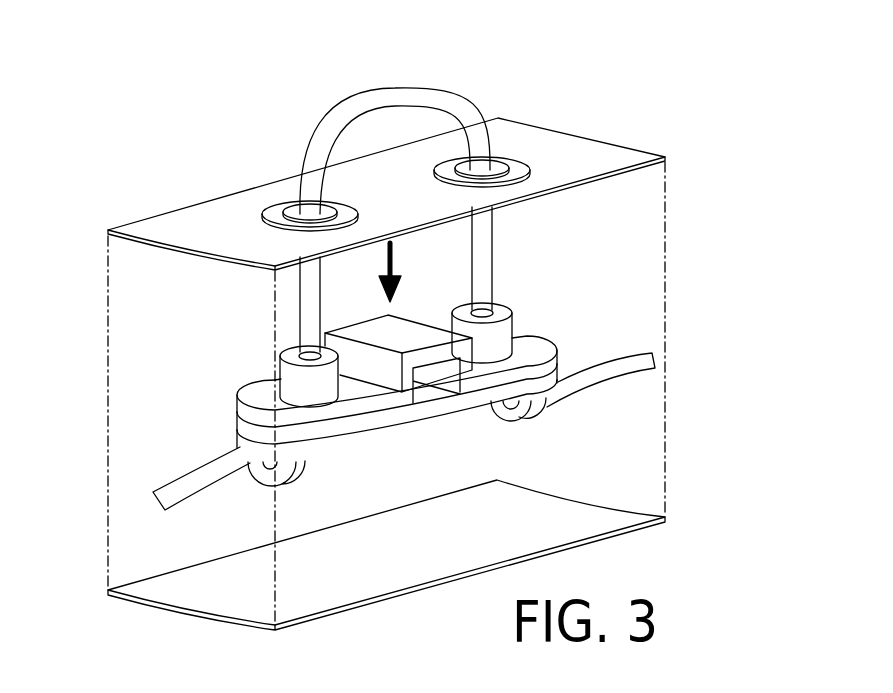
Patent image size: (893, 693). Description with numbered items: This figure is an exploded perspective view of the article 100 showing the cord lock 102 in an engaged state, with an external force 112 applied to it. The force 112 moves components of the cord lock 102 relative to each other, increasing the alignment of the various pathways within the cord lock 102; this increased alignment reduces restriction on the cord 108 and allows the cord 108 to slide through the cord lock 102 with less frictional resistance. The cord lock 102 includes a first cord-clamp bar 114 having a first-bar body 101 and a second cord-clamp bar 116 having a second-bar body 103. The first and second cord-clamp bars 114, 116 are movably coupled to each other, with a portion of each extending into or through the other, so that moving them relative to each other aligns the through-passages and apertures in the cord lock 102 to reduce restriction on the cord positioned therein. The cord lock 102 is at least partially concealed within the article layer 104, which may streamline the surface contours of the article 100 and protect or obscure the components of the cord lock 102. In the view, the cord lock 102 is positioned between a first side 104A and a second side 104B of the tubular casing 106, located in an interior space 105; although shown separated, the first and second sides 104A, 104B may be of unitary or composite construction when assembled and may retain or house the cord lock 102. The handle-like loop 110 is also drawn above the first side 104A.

The article 100 is at (684, 69).
The first-bar body 101 is at (238, 414).
The cord lock 102 is at (254, 395).
The second-bar body 103 is at (240, 434).
The article layer 104 is at (381, 364).
The first side 104A is at (540, 133).
The second side 104B is at (542, 502).
The interior space 105 is at (622, 252).
The tubular casing 106 is at (136, 330).
The cord 108 is at (620, 372).
The handle 110 is at (383, 97).
The external force 112 is at (396, 257).
The first cord-clamp bar 114 is at (548, 362).
The second cord-clamp bar 116 is at (541, 380).